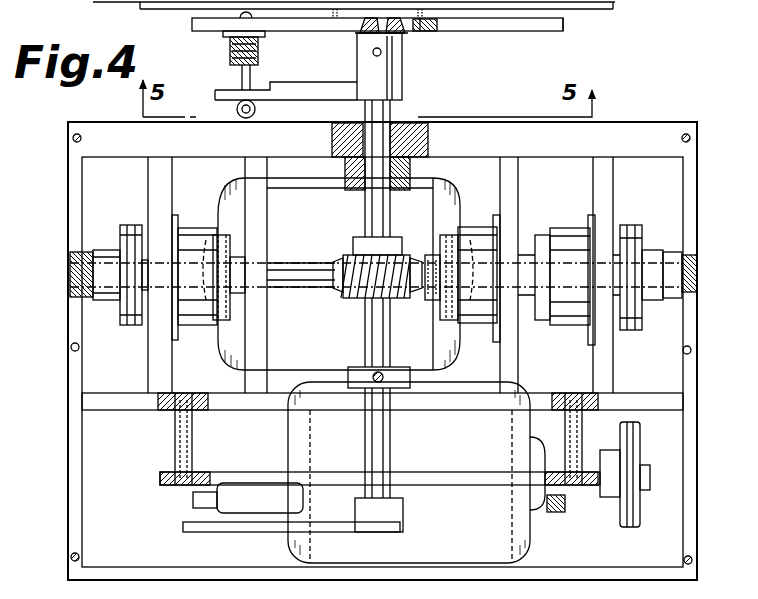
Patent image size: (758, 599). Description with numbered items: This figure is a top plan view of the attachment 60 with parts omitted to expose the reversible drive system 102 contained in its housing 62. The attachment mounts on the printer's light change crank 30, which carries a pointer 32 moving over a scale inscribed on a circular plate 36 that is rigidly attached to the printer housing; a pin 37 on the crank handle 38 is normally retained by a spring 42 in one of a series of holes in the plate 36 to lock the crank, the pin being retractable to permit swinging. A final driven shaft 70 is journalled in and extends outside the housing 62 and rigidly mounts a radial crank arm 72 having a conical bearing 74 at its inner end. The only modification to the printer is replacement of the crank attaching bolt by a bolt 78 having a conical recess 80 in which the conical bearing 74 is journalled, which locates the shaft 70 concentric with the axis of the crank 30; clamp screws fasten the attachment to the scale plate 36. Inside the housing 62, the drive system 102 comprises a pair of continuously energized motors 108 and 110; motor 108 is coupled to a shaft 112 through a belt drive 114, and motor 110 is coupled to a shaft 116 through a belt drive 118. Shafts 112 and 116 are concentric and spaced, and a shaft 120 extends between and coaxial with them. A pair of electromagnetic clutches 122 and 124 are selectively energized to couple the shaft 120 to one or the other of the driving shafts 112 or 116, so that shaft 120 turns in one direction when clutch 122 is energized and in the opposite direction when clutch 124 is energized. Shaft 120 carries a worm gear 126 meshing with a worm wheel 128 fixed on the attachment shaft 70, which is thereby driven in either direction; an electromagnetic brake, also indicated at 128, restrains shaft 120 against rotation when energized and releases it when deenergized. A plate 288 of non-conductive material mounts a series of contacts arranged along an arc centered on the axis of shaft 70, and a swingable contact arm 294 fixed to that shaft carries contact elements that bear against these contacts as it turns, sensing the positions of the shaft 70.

The light change crank 30 is at (473, 22).
The pointer 32 is at (566, 27).
The circular plate 36 is at (165, 8).
The pin 37 is at (241, 72).
The crank handle 38 is at (259, 52).
The spring 42 is at (230, 46).
The attachment 60 is at (70, 347).
The housing 62 is at (68, 380).
The final driven shaft 70 is at (388, 115).
The radial crank arm 72 is at (314, 81).
The conical bearing 74 is at (412, 33).
The bolt 78 is at (358, 30).
The conical recess 80 is at (357, 40).
The reversible drive system 102 is at (105, 178).
The motor 108 is at (233, 186).
The motor 110 is at (532, 540).
The shaft 112 is at (98, 250).
The belt drive 114 is at (130, 224).
The shaft 116 is at (652, 255).
The belt drive 118 is at (630, 224).
The shaft 120 is at (300, 272).
The electromagnetic clutch 122 is at (198, 228).
The electromagnetic clutch 124 is at (575, 234).
The worm gear 126 is at (337, 300).
The worm wheel 128 is at (356, 300).
The plate 288 is at (466, 452).
The swingable contact arm 294 is at (356, 532).